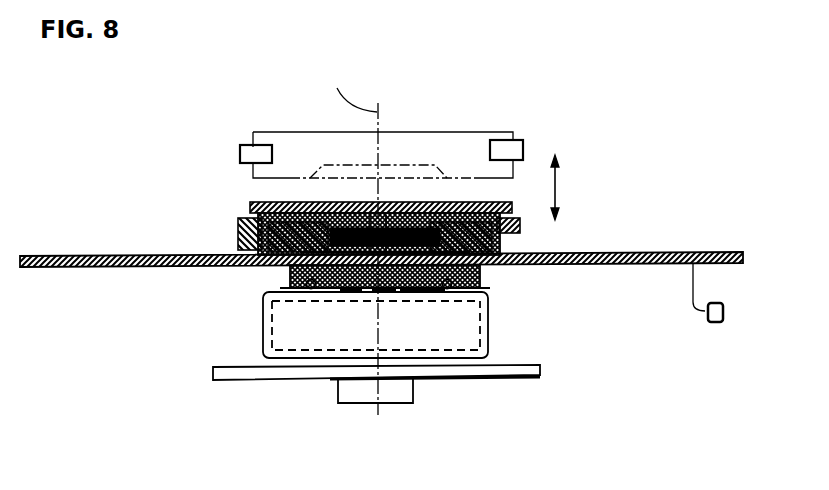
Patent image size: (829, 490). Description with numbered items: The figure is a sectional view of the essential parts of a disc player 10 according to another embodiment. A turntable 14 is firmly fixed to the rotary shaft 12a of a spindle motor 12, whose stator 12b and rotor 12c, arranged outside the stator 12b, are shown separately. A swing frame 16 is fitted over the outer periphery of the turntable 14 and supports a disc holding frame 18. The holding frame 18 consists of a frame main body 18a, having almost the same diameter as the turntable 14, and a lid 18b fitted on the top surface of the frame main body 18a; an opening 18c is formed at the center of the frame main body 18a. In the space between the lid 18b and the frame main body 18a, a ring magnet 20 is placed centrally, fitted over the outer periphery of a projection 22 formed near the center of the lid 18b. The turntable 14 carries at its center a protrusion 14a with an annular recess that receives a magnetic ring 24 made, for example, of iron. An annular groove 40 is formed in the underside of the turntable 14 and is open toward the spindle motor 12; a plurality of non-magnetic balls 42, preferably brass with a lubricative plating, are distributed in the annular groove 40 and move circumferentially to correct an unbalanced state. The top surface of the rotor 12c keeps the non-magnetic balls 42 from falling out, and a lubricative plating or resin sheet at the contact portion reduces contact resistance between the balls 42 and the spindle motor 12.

The disc player 10 is at (101, 113).
The spindle motor 12 is at (590, 320).
The rotary shaft 12a is at (373, 297).
The stator 12b is at (468, 362).
The rotor 12c is at (490, 328).
The turntable 14 is at (465, 272).
The protrusion 14a is at (422, 297).
The swing frame 16 is at (243, 228).
The disc holding frame 18 is at (456, 200).
The frame main body 18a is at (507, 244).
The lid 18b is at (513, 203).
The opening 18c is at (352, 296).
The ring magnet 20 is at (330, 206).
The projection 22 is at (389, 213).
The magnetic ring 24 is at (389, 295).
The annular groove 40 is at (300, 282).
The non-magnetic balls 42 is at (311, 296).